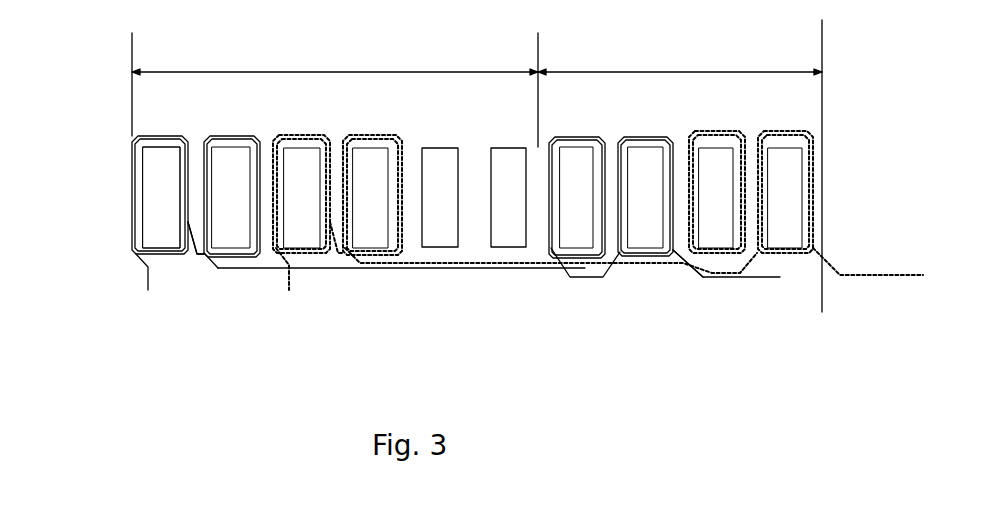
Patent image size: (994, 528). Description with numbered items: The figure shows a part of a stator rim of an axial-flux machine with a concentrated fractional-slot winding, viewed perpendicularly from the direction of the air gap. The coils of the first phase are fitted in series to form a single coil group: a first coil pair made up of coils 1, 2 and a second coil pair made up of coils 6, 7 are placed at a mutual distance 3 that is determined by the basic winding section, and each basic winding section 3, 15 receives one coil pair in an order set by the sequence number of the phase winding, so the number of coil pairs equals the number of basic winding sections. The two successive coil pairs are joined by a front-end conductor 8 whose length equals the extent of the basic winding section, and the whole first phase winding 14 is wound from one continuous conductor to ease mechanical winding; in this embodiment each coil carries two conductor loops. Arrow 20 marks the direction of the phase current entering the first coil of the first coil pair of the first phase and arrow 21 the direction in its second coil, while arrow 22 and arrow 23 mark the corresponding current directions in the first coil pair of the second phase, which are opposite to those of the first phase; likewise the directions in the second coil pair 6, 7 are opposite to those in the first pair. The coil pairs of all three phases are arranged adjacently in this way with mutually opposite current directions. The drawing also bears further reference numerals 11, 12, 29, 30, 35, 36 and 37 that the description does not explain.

The coil 1 is at (143, 135).
The coil 2 is at (236, 135).
The distance between coil pairs 3 is at (292, 72).
The coil 6 is at (562, 135).
The coil 7 is at (633, 135).
The front-end conductor 8 is at (403, 268).
The slot 11 is at (155, 173).
The lead wire 12 is at (188, 220).
The first phase winding 14 is at (148, 268).
The basic winding section 15 is at (653, 72).
The arrow 20 is at (132, 185).
The arrow 21 is at (258, 182).
The arrow 22 is at (273, 178).
The arrow 23 is at (420, 150).
The connecting wire 29 is at (297, 253).
The second-layer coil 30 is at (400, 173).
The terminal lead 35 is at (287, 280).
The terminal lead 36 is at (752, 257).
The second-layer coil 37 is at (802, 128).